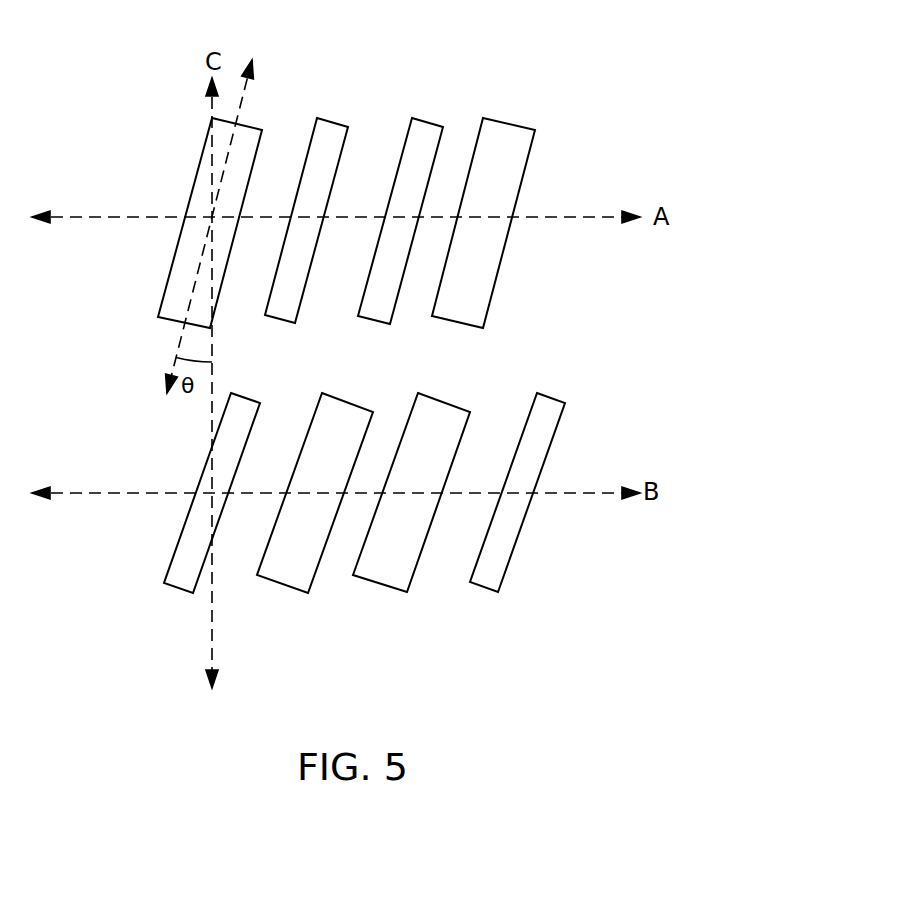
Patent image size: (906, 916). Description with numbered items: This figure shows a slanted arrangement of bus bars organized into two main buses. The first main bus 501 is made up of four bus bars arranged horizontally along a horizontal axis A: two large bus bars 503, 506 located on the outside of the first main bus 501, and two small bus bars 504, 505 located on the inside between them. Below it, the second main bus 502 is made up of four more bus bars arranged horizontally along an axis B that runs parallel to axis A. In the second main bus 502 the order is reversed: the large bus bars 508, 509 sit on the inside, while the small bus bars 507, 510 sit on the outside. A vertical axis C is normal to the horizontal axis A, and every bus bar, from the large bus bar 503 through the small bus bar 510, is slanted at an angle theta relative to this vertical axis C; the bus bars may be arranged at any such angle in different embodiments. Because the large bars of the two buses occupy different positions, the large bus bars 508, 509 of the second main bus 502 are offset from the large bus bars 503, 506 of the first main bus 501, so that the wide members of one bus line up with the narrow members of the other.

The first main bus 501 is at (658, 128).
The second main bus 502 is at (658, 402).
The large bus bar 503 is at (253, 127).
The small bus bar 504 is at (332, 119).
The small bus bar 505 is at (427, 119).
The large bus bar 506 is at (509, 121).
The small bus bar 507 is at (178, 592).
The large bus bar 508 is at (285, 589).
The large bus bar 509 is at (382, 588).
The small bus bar 510 is at (488, 589).